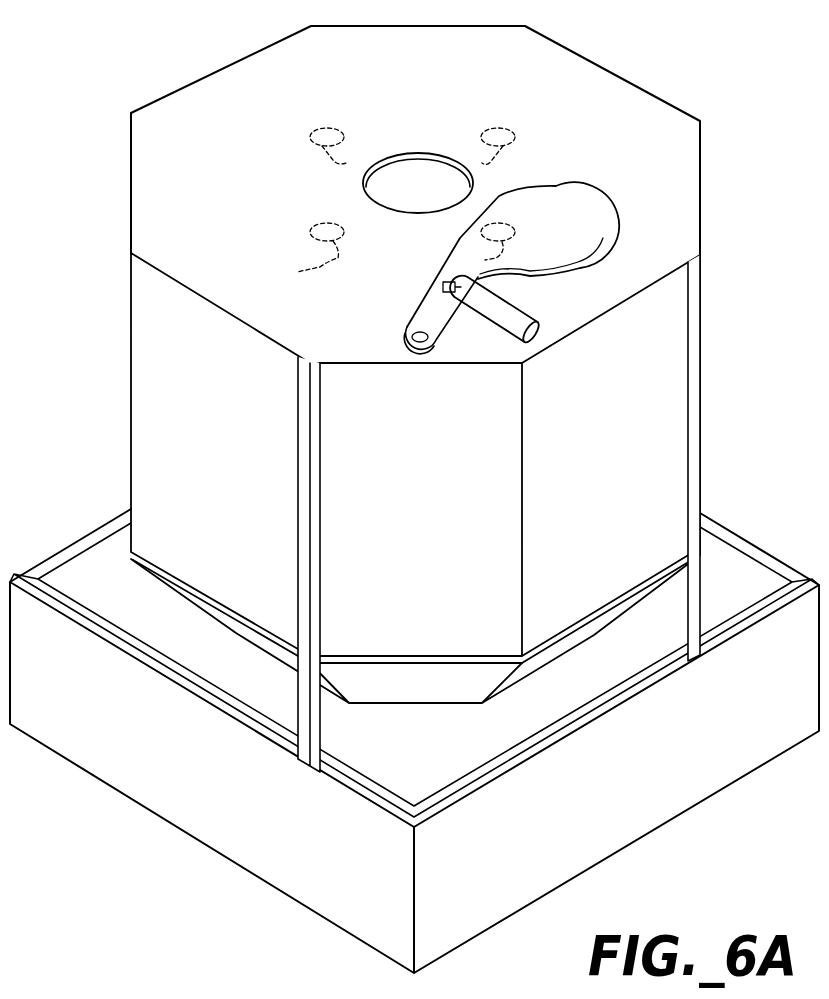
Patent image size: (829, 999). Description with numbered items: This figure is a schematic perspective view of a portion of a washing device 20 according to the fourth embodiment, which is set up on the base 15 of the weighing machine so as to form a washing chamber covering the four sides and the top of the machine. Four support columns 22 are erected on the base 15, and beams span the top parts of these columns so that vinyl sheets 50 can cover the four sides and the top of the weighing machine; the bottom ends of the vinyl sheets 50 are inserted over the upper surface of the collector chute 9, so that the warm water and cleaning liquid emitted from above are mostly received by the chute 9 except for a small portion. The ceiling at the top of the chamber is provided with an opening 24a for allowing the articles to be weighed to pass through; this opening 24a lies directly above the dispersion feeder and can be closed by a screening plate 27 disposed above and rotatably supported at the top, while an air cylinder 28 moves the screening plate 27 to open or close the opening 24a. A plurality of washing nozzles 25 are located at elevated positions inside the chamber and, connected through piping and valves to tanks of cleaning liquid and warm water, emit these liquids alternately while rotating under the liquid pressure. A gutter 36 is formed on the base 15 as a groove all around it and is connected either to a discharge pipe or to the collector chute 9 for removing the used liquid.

The washing device 20 is at (571, 63).
The vinyl sheets 50 is at (143, 396).
The support columns 22 is at (322, 552).
The collector chute 9 is at (185, 600).
The gutter 36 is at (30, 583).
The base 15 is at (648, 790).
The opening 24a is at (420, 215).
The nozzles 25 is at (386, 205).
The screening plate 27 is at (583, 222).
The air cylinder 28 is at (506, 308).